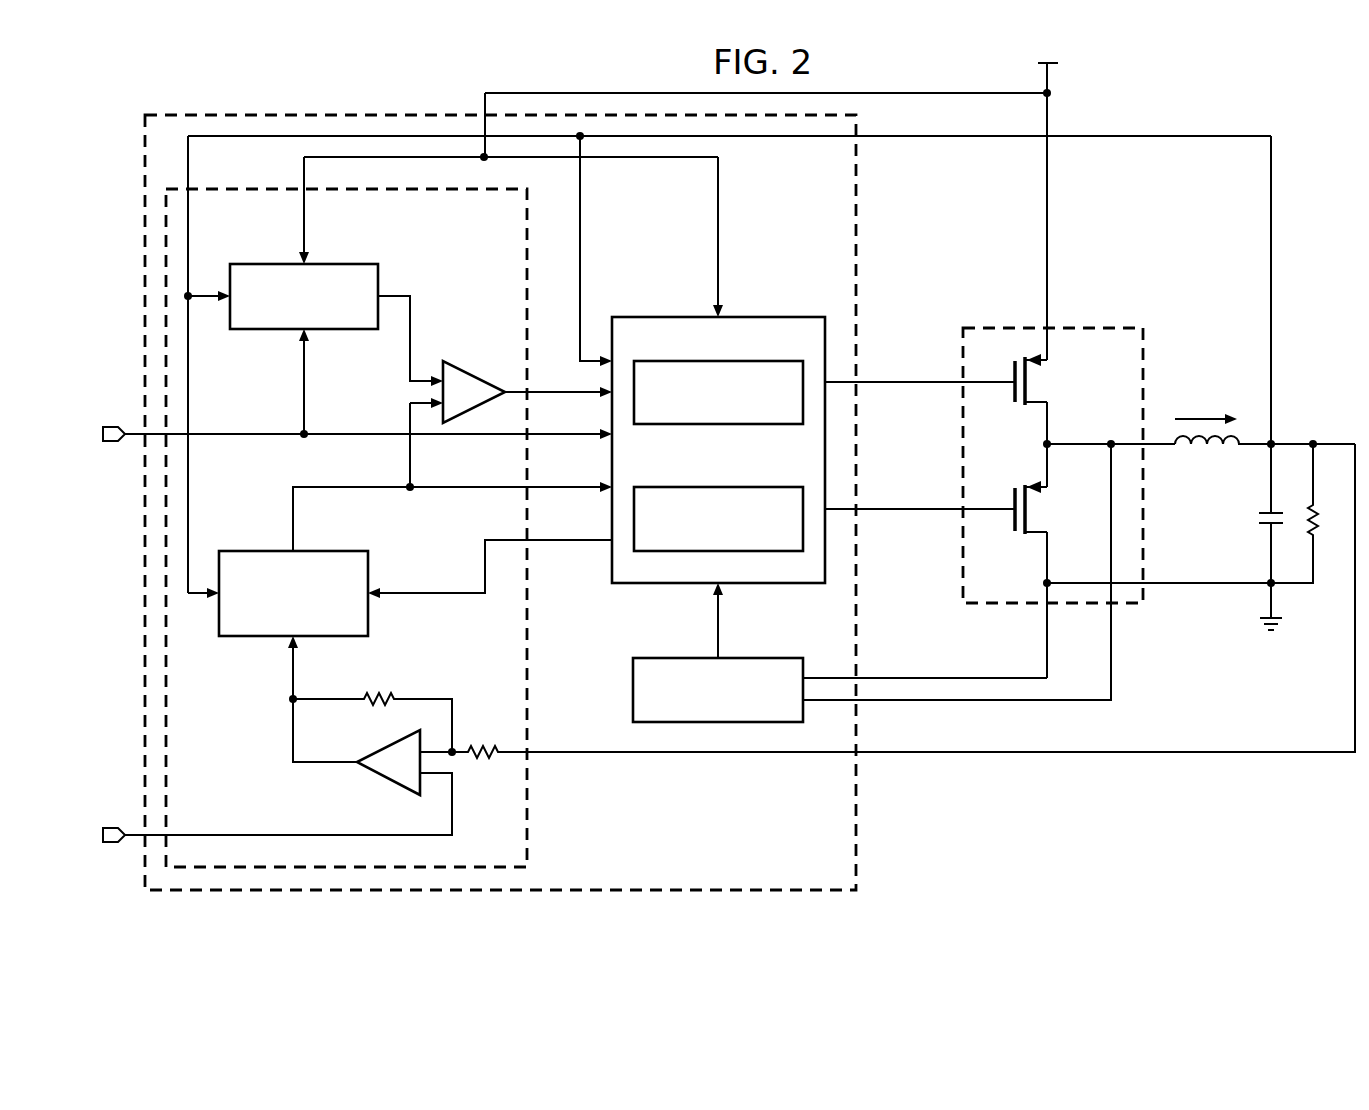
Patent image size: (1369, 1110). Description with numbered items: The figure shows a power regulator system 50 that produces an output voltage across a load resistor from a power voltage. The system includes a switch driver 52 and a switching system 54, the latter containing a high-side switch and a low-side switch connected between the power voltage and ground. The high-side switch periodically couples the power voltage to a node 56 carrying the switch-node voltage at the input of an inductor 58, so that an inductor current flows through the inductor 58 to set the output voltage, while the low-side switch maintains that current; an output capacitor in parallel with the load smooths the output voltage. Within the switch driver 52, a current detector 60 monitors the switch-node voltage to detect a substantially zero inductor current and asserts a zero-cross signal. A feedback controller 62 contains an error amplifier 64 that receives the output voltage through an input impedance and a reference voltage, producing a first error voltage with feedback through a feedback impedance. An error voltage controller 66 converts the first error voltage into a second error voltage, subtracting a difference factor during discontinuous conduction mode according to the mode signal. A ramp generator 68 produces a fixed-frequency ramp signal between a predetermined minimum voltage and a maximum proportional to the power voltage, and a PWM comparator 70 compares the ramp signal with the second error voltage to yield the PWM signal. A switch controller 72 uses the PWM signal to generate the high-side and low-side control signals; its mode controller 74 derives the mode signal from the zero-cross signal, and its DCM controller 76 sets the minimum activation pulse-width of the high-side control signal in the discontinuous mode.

The power regulator system 50 is at (98, 100).
The switch driver 52 is at (337, 108).
The switching system 54 is at (1100, 318).
The node 56 is at (1044, 442).
The inductor 58 is at (1246, 440).
The current detector 60 is at (677, 658).
The feedback controller 62 is at (540, 662).
The error amplifier 64 is at (386, 785).
The error voltage controller 66 is at (254, 636).
The ramp generator 68 is at (263, 264).
The PWM comparator 70 is at (478, 373).
The switch controller 72 is at (656, 310).
The mode controller 74 is at (676, 424).
The DCM controller 76 is at (762, 487).